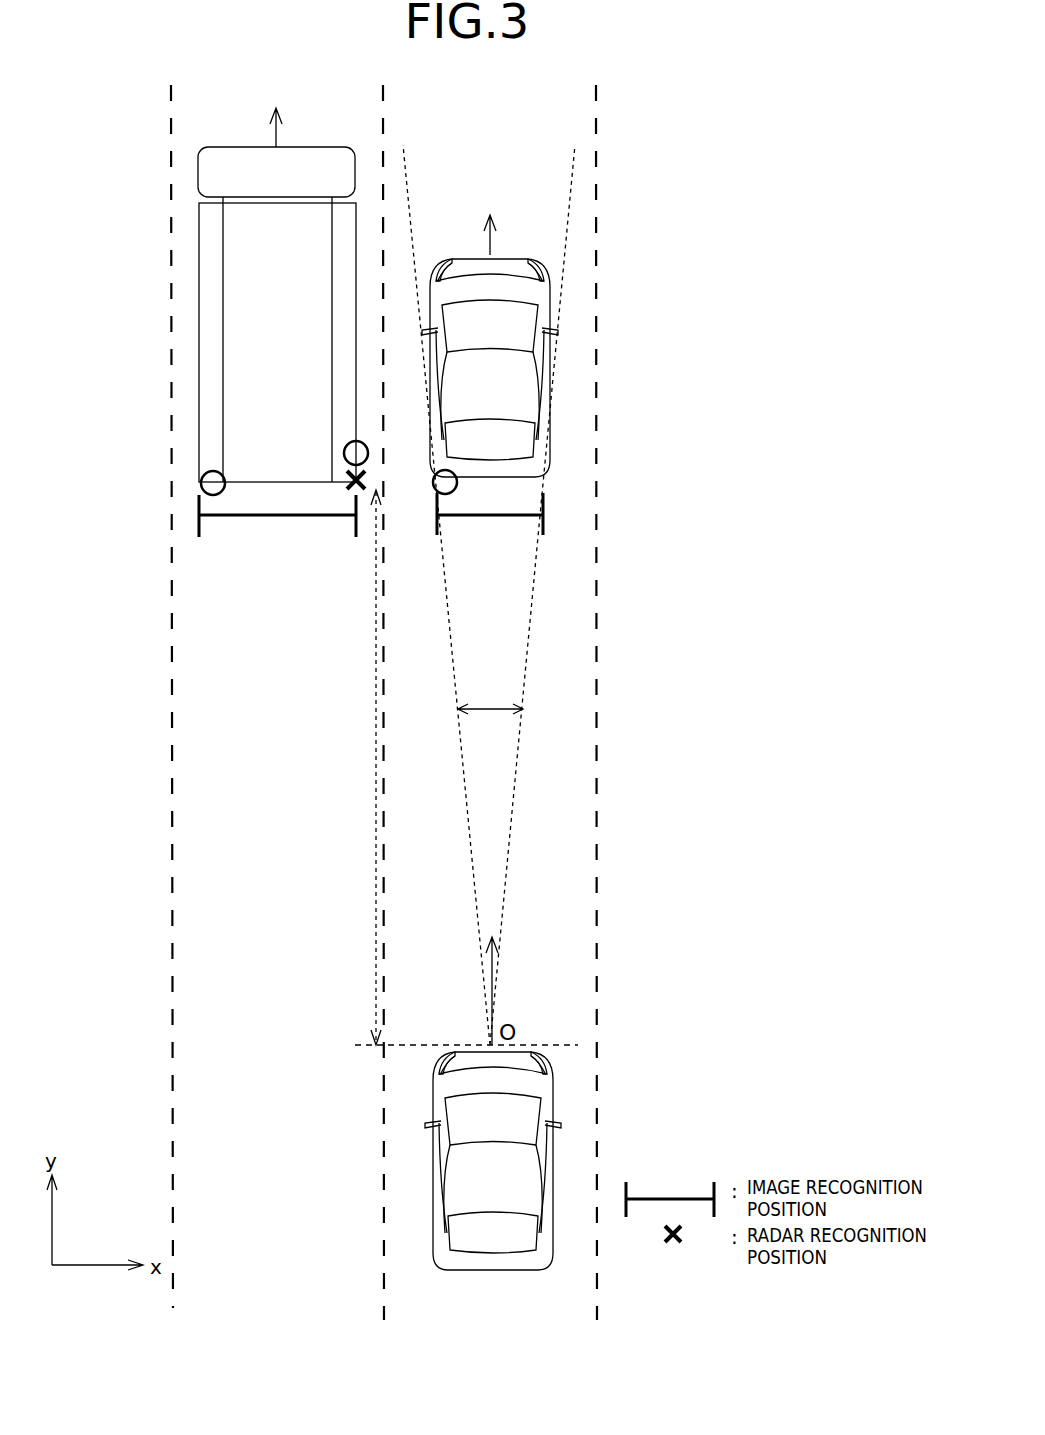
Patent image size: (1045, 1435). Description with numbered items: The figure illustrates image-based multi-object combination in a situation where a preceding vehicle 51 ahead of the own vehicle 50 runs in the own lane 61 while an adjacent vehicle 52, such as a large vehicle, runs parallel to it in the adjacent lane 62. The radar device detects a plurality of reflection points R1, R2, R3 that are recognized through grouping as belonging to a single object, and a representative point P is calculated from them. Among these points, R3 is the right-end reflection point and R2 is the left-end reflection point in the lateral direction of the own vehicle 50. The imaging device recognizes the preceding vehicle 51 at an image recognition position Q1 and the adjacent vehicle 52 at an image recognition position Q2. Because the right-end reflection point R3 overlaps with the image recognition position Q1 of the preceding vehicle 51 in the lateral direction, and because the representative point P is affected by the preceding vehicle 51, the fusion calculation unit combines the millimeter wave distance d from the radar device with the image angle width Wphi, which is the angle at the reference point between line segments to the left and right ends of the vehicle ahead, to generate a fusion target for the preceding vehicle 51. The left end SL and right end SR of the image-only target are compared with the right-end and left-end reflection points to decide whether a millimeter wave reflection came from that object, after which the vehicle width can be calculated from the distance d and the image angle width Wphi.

The own vehicle 50 is at (554, 1083).
The preceding vehicle 51 is at (550, 300).
The adjacent vehicle 52 is at (199, 415).
The own lane 61 is at (572, 921).
The adjacent lane 62 is at (196, 925).
The reflection point R1 is at (365, 446).
The left-end reflection point R2 is at (205, 472).
The right-end reflection point R3 is at (433, 483).
The representative point P is at (347, 488).
The image recognition position of the preceding vehicle Q1 is at (495, 516).
The image recognition position of the adjacent vehicle Q2 is at (277, 516).
The left end of the image-only target SL is at (437, 534).
The right end of the image-only target SR is at (543, 534).
The millimeter wave distance d is at (366, 767).
The image angle width Wphi is at (490, 696).